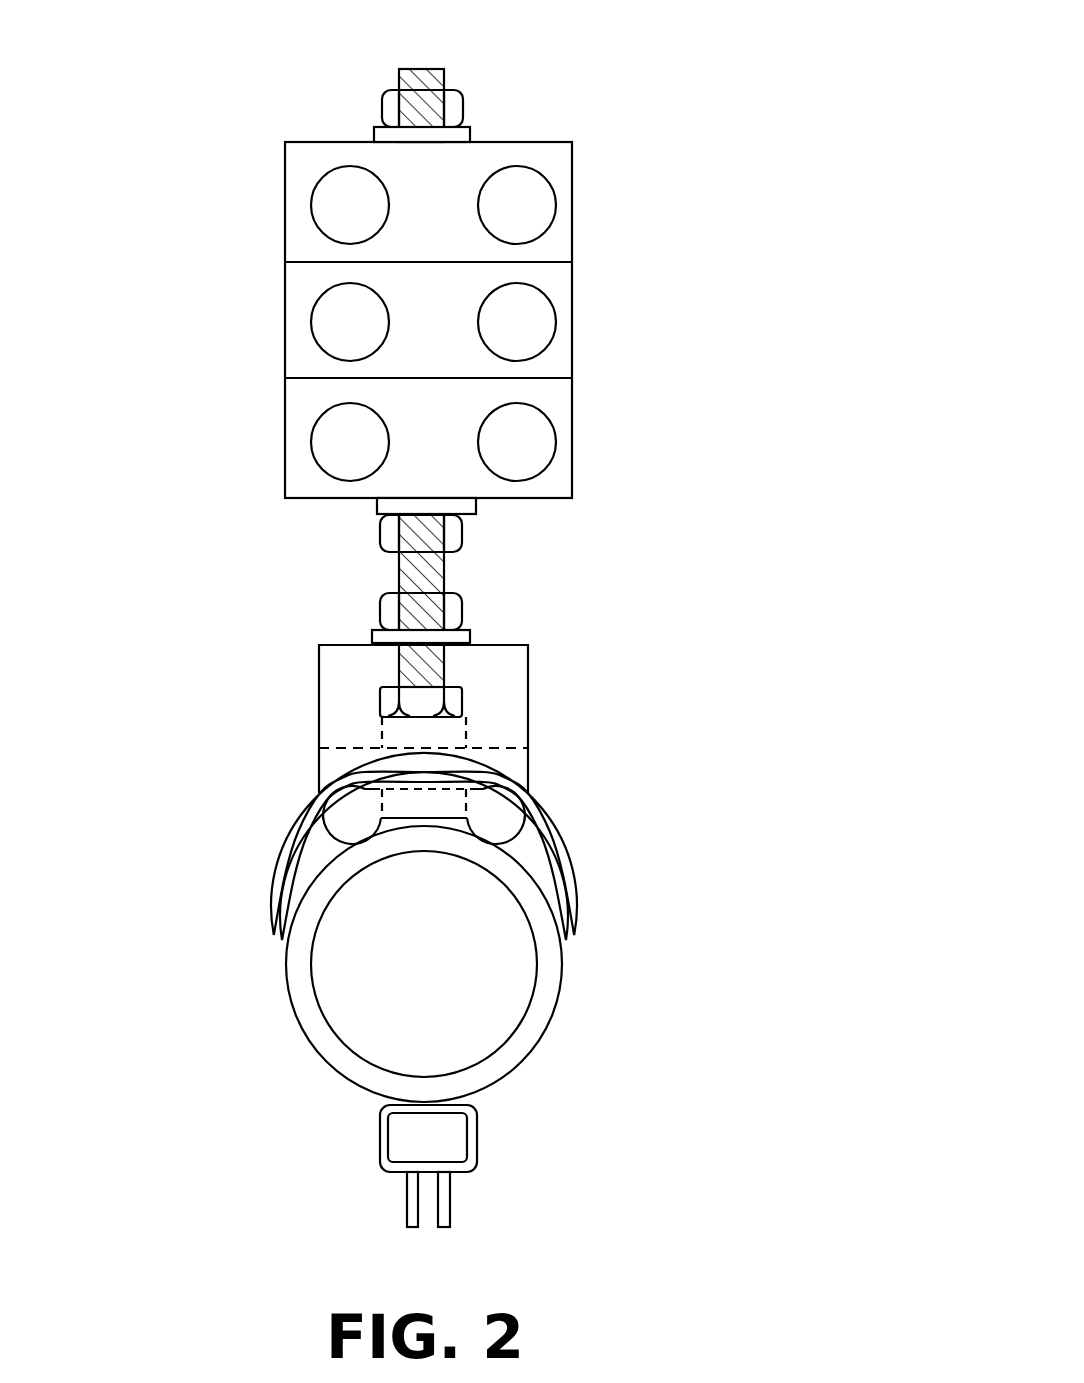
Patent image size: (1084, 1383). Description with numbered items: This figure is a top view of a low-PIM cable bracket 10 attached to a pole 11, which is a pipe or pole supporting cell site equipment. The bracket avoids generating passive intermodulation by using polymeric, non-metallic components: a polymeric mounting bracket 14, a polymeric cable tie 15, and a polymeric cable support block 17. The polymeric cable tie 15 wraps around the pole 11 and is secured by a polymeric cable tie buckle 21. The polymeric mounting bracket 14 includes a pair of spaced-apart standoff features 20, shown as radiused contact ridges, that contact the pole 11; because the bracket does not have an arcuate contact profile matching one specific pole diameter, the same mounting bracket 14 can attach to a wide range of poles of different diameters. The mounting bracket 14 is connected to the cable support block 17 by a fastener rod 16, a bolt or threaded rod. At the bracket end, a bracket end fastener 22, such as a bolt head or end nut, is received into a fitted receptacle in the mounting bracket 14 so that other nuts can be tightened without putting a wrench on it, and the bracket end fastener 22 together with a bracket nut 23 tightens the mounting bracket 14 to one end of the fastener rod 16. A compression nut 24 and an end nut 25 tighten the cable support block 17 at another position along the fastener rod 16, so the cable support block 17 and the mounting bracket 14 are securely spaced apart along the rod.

The low-PIM cable bracket 10 is at (500, 618).
The pole 11 is at (303, 1003).
The polymeric mounting bracket 14 is at (337, 722).
The polymeric cable tie 15 is at (282, 902).
The fastener rod 16 is at (492, 565).
The polymeric cable support block 17 is at (660, 310).
The standoff features 20 is at (484, 818).
The polymeric cable tie buckle 21 is at (512, 1156).
The bracket end fastener 22 is at (498, 709).
The bracket nut 23 is at (387, 613).
The compression nut 24 is at (387, 532).
The end nut 25 is at (393, 109).